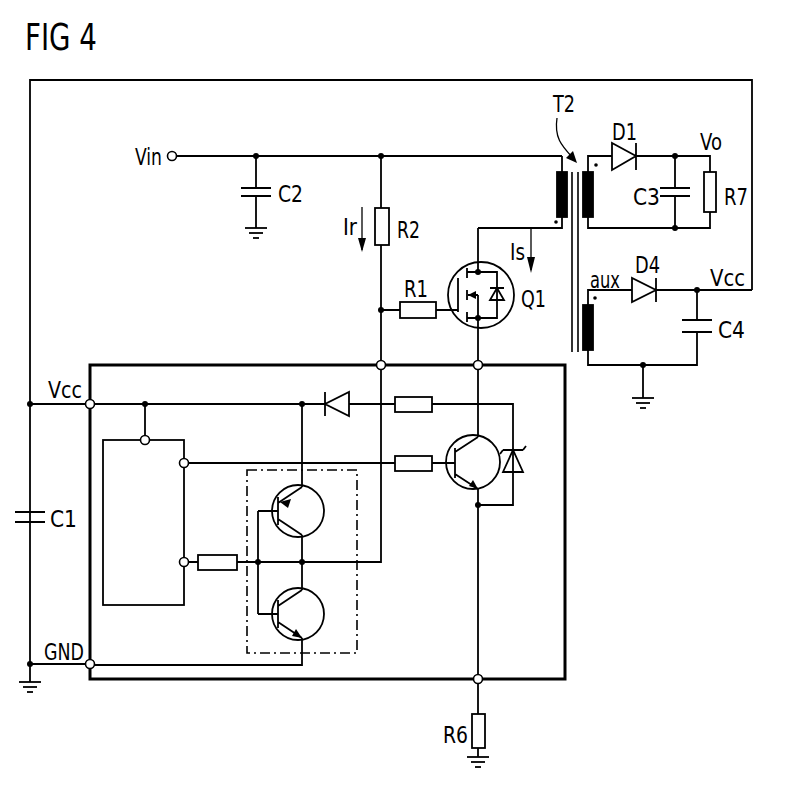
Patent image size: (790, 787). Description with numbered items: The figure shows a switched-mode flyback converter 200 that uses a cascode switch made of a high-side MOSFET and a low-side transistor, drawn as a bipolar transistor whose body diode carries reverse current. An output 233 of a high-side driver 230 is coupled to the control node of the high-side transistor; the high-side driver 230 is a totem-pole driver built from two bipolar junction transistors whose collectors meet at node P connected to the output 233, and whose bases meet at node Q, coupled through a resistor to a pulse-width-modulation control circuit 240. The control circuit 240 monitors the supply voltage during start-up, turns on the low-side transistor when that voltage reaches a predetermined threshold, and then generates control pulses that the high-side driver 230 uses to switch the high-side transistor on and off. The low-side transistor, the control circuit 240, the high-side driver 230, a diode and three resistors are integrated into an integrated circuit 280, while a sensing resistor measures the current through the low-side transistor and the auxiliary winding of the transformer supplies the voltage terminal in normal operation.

The switched-mode flyback converter 200 is at (692, 76).
The integrated circuit 280 is at (256, 363).
The PWM control circuit 240 is at (145, 607).
The high-side driver 230 is at (248, 534).
The output of high-side driver 233 is at (372, 563).